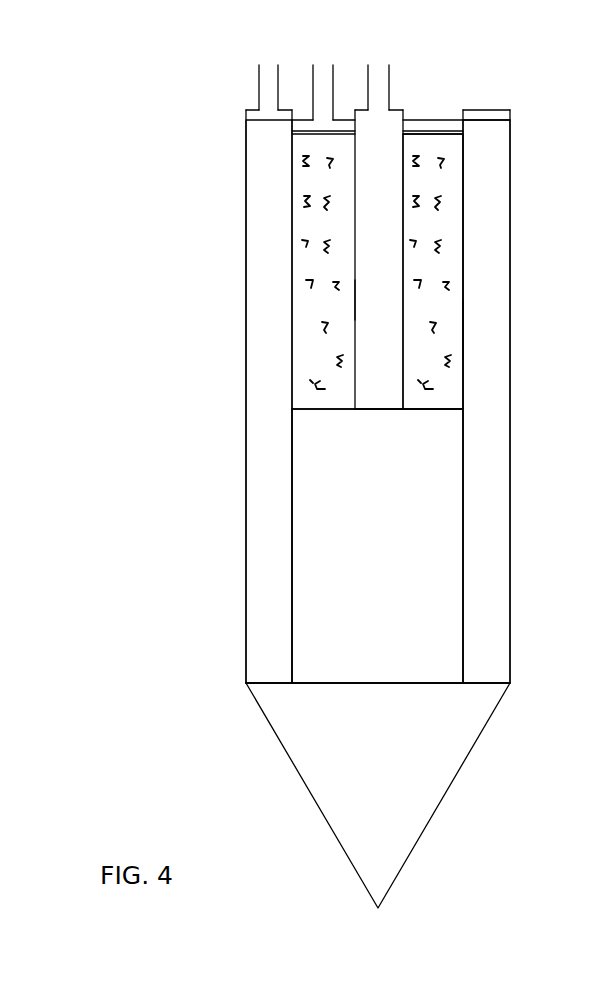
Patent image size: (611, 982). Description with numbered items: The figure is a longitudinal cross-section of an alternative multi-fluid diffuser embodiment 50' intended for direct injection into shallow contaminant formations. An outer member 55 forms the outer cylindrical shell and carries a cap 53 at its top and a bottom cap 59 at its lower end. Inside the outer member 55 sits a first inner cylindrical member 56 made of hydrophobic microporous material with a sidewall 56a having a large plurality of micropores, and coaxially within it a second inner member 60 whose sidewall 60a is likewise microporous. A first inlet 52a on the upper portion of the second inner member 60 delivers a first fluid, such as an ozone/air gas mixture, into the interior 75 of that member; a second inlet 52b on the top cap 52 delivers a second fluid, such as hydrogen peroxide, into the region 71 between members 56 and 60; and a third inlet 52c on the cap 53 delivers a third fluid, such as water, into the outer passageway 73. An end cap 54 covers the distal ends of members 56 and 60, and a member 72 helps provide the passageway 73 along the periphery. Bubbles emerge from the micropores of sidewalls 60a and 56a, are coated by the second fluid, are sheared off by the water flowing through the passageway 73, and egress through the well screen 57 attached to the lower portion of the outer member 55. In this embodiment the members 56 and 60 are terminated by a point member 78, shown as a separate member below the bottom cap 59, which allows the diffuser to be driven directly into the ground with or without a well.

The alternative multi-fluid diffuser embodiment 50' is at (269, 351).
The top cap 52 is at (433, 118).
The first inlet 52a is at (389, 78).
The second inlet 52b is at (333, 78).
The third inlet 52c is at (259, 78).
The cap 53 is at (246, 108).
The end cap 54 is at (425, 412).
The outer member 55 is at (510, 142).
The first inner cylindrical member 56 is at (475, 253).
The sidewall of first inner member 56a is at (465, 333).
The well screen 57 is at (524, 555).
The bottom cap 59 is at (375, 696).
The second inner member 60 is at (345, 229).
The sidewall of second inner member 60a is at (353, 298).
The region 71 is at (307, 172).
The member 72 is at (293, 555).
The passageway 73 is at (272, 454).
The interior of second inner member 75 is at (382, 323).
The point member 78 is at (443, 797).